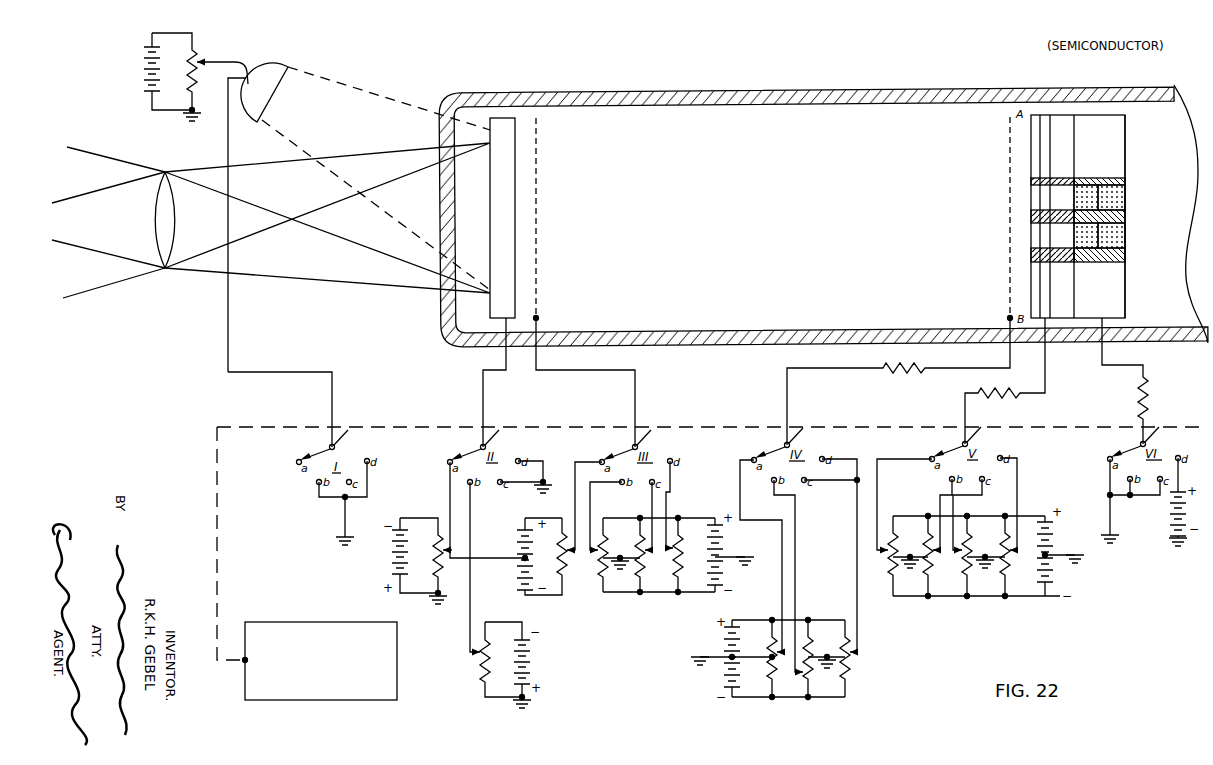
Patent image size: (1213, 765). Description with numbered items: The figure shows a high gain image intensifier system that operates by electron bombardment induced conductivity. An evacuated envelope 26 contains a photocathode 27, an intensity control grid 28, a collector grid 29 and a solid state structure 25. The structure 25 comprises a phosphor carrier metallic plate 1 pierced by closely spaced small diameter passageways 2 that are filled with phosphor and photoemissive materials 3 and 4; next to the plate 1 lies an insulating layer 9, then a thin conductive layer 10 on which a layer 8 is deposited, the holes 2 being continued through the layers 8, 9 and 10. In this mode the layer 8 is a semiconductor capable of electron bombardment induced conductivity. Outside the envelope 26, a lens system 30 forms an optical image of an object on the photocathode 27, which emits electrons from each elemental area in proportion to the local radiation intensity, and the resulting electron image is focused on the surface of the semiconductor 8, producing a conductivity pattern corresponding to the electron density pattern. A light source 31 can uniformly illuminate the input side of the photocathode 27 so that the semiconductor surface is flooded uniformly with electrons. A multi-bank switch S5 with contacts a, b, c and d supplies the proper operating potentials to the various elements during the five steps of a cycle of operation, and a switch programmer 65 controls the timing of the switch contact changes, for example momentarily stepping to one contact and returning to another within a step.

The phosphor carrier metallic plate 1 is at (1106, 116).
The passageways 2 is at (1100, 178).
The phosphor material 3 is at (1128, 193).
The photoemissive material 4 is at (1128, 200).
The semiconductor layer 8 is at (1036, 116).
The insulating layer 9 is at (1063, 116).
The conductive layer 10 is at (1046, 116).
The solid state structure 25 is at (1153, 292).
The evacuated envelope 26 is at (831, 96).
The photocathode 27 is at (498, 130).
The intensity control grid 28 is at (538, 249).
The collector grid 29 is at (1010, 255).
The lens system 30 is at (165, 274).
The light source 31 is at (276, 76).
The switch programmer 65 is at (336, 622).
The switch S5 is at (416, 427).